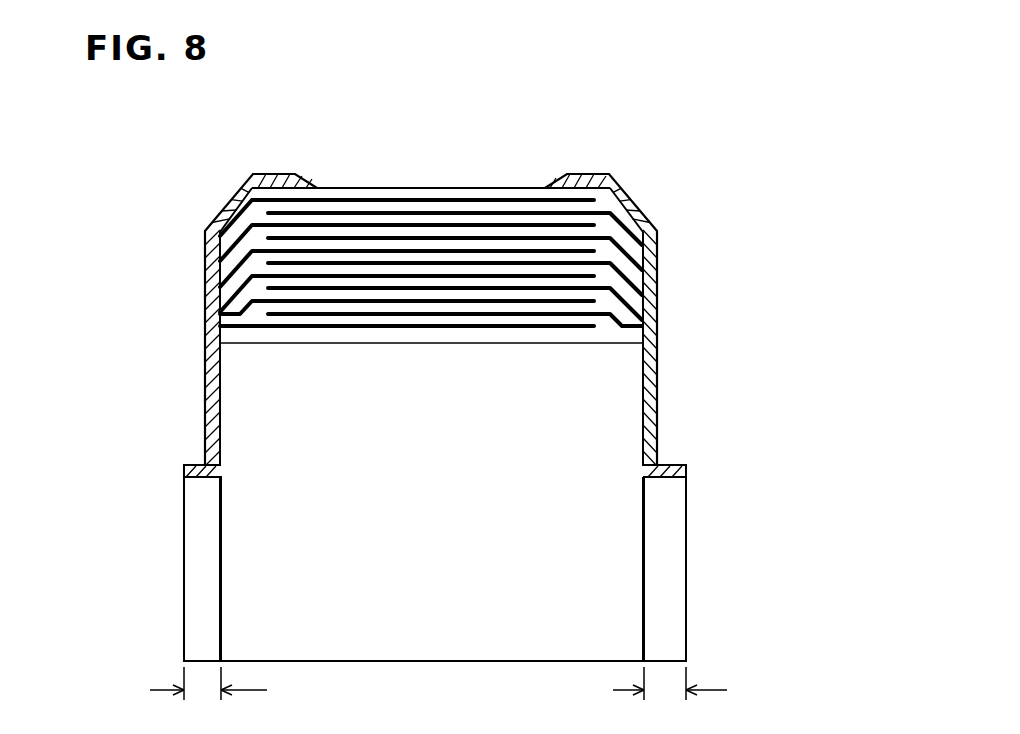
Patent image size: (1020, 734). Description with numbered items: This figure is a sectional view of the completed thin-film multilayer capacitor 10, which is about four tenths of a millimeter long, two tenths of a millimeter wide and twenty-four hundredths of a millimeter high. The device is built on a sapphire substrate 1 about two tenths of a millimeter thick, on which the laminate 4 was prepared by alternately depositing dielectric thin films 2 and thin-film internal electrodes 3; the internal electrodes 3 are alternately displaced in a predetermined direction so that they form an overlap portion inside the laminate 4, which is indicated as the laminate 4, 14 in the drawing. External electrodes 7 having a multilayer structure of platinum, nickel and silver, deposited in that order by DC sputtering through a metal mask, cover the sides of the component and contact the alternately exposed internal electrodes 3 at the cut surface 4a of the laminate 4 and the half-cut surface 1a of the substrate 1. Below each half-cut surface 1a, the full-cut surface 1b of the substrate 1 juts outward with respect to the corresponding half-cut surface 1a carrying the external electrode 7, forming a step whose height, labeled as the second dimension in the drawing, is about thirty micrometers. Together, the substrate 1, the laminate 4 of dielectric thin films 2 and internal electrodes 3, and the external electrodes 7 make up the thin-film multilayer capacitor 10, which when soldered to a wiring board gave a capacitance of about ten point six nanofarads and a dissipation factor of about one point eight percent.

The sapphire substrate 1 is at (688, 537).
The half-cut surface 1a is at (205, 397).
The full-cut surface 1b is at (184, 560).
The dielectric thin film 2 is at (220, 249).
The thin-film internal electrode 3 is at (400, 200).
The laminate 4 is at (595, 292).
The external electrode top portion 14 is at (505, 188).
The cut surface of the laminate 4a is at (205, 275).
The external electrode 7 is at (205, 343).
The thin-film multilayer capacitor 10 is at (700, 232).